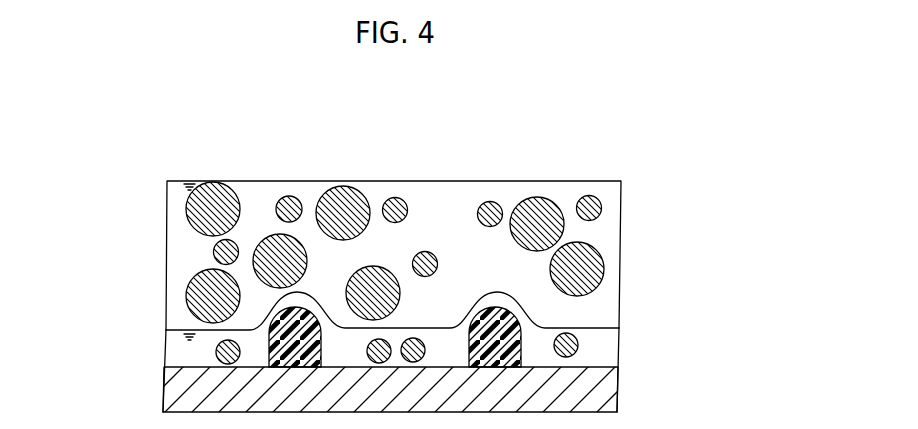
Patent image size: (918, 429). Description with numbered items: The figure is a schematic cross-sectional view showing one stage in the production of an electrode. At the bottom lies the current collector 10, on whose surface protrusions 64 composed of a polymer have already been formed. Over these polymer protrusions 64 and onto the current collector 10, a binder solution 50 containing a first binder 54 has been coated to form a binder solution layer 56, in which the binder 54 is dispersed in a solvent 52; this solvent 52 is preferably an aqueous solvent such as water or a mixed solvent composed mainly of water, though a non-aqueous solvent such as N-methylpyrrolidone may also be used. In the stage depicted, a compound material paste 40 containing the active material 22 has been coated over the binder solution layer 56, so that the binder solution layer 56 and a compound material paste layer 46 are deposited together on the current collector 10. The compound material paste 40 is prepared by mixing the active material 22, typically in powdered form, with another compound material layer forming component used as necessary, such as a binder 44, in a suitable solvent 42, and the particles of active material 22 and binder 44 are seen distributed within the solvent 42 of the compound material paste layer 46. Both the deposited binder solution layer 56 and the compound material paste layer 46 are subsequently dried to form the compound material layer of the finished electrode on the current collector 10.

The current collector 10 is at (597, 388).
The active material 22 is at (343, 187).
The compound material paste 40 is at (393, 255).
The solvent 42 is at (424, 193).
The binder 44 is at (213, 248).
The compound material paste layer 46 is at (445, 230).
The binder solution 50 is at (391, 352).
The solvent 52 is at (600, 340).
The binder 54 is at (216, 347).
The binder solution layer 56 is at (445, 352).
The protrusions 64 is at (276, 320).